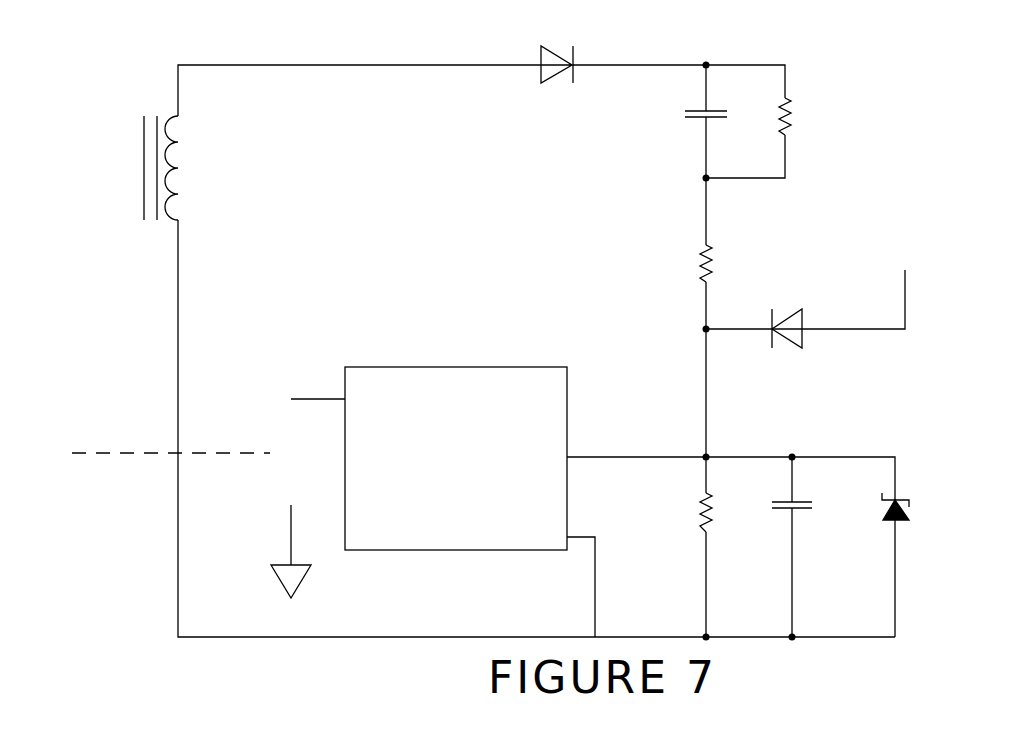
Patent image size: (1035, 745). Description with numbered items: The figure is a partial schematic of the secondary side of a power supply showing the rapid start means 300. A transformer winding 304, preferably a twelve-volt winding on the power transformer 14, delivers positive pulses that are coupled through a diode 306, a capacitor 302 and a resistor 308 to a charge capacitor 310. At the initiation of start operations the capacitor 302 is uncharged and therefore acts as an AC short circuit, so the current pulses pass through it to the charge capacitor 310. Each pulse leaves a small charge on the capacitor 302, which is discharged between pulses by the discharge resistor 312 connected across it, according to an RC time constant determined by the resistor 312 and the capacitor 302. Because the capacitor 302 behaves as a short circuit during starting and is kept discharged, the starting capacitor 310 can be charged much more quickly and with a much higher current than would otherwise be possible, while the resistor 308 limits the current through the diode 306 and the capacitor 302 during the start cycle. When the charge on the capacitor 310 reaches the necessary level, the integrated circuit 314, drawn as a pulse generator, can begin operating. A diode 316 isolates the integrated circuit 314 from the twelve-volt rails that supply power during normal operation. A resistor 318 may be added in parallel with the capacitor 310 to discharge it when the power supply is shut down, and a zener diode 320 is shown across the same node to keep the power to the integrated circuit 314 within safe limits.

The rapid start means 300 is at (940, 146).
The power transformer 14 is at (131, 111).
The transformer winding 304 is at (193, 170).
The diode 306 is at (552, 68).
The capacitor 302 is at (669, 117).
The discharge resistor 312 is at (797, 122).
The resistor 308 is at (698, 268).
The diode 316 is at (800, 318).
The integrated circuit 314 is at (487, 517).
The resistor 318 is at (698, 513).
The charge capacitor 310 is at (813, 522).
The zener diode 320 is at (905, 512).